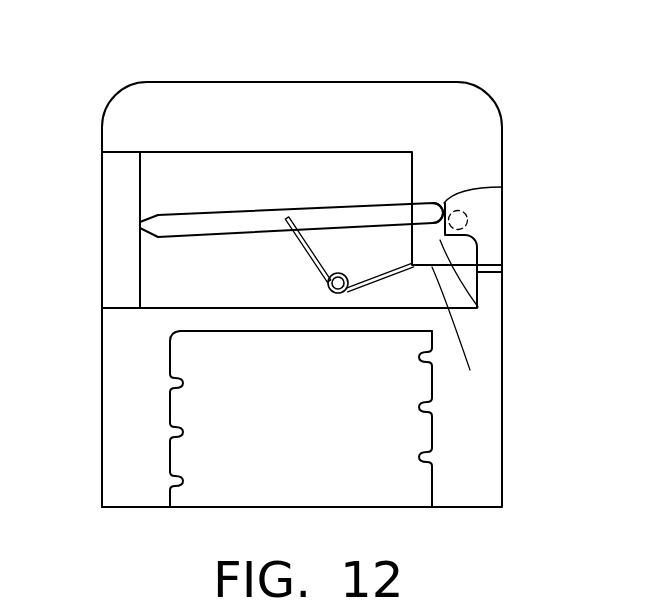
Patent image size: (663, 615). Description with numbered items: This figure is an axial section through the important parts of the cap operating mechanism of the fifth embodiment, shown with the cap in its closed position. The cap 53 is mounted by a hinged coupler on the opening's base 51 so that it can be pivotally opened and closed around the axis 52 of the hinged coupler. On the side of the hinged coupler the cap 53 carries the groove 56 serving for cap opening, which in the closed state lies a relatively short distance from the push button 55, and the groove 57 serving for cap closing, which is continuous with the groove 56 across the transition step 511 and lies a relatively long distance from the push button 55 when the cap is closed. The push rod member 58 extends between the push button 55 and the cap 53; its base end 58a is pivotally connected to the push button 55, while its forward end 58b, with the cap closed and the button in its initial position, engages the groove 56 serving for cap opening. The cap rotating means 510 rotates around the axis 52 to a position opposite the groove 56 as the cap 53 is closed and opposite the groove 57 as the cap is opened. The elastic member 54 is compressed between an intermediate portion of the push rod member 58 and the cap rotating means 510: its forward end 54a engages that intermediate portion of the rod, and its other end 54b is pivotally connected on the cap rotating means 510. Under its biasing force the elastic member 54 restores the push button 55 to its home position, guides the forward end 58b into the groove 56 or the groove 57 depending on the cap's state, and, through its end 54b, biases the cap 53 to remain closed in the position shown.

The opening's base 51 is at (483, 487).
The axis of the hinged coupler 52 is at (478, 218).
The cap 53 is at (385, 94).
The elastic member 54 is at (305, 245).
The forward end of elastic member 54a is at (292, 216).
The other end of elastic member 54b is at (413, 265).
The push button 55 is at (108, 358).
The groove serving for cap opening 56 is at (502, 187).
The groove serving for cap closing 57 is at (468, 249).
The push rod member 58 is at (220, 220).
The base end of push rod member 58a is at (145, 220).
The forward end of push rod member 58b is at (443, 203).
The cap rotating means 510 is at (470, 370).
The transition step 511 is at (478, 307).